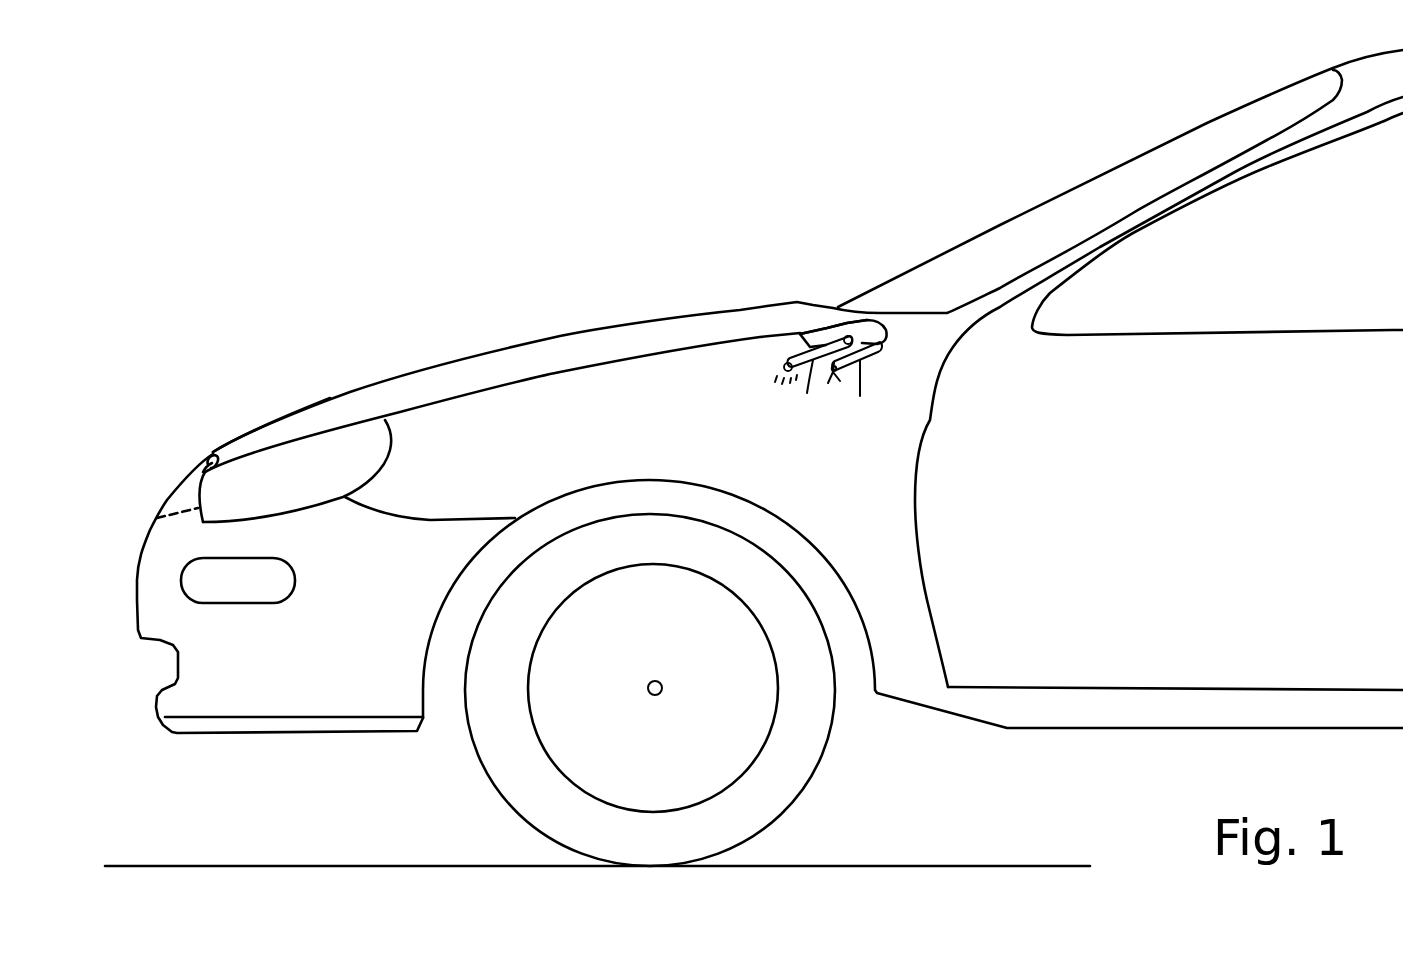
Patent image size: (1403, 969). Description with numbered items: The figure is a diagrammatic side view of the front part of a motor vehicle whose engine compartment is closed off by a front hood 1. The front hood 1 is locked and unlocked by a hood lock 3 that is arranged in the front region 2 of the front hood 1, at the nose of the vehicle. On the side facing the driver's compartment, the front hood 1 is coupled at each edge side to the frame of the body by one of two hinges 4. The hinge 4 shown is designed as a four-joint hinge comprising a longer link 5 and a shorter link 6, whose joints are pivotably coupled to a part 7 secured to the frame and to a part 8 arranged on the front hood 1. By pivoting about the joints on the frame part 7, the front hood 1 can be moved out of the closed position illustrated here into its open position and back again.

The front hood 1 is at (568, 357).
The front region 2 is at (245, 455).
The hood lock 3 is at (198, 444).
The hinge 4 is at (763, 354).
The longer link 5 is at (813, 360).
The shorter link 6 is at (860, 360).
The frame part 7 is at (823, 392).
The hood part 8 is at (812, 342).